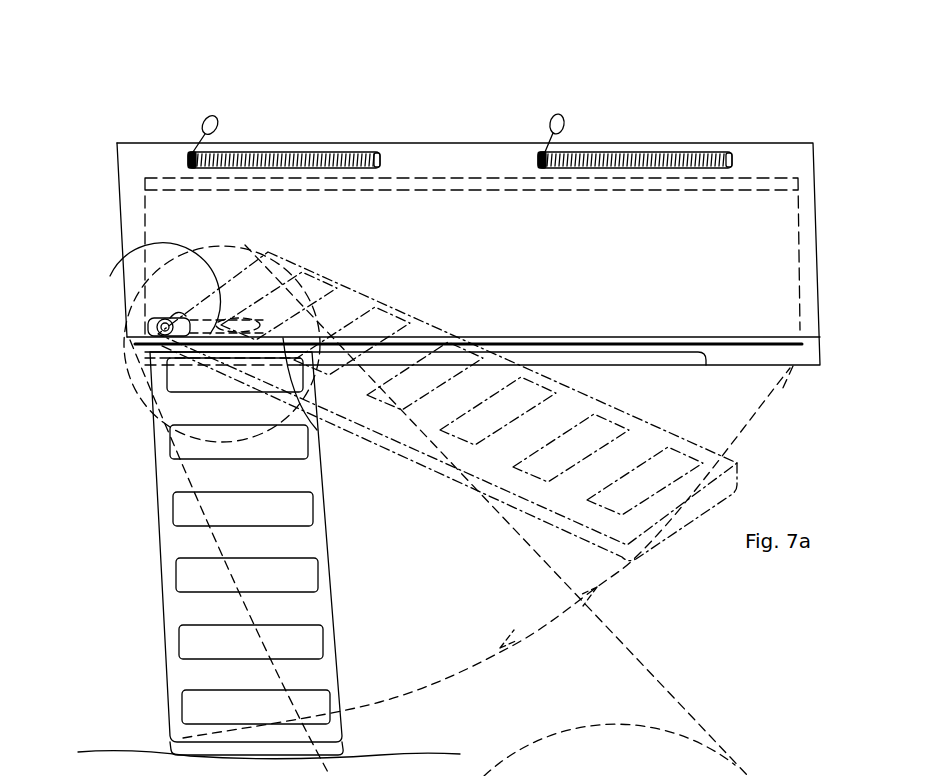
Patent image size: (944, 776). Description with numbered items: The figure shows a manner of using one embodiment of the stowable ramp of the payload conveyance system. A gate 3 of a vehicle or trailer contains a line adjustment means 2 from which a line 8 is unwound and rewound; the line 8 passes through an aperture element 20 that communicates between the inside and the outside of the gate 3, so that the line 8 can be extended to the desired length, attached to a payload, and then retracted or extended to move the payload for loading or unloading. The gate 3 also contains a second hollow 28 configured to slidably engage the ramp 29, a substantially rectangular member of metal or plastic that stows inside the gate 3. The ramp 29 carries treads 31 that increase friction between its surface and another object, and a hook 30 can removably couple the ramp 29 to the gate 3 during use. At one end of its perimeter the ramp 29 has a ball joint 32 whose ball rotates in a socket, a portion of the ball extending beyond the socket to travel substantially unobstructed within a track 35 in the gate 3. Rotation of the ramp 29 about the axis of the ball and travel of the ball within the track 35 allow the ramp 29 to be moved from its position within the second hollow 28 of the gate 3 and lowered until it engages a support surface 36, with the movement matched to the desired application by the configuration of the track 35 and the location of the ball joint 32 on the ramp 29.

The line adjustment means 2 is at (290, 152).
The gate 3 is at (805, 250).
The line 8 is at (213, 113).
The aperture element 20 is at (385, 150).
The second hollow 28 is at (780, 352).
The ramp 29 is at (333, 592).
The hook 30 is at (283, 330).
The tread 31 is at (313, 645).
The ball joint 32 is at (150, 338).
The track 35 is at (110, 276).
The support surface 36 is at (103, 748).